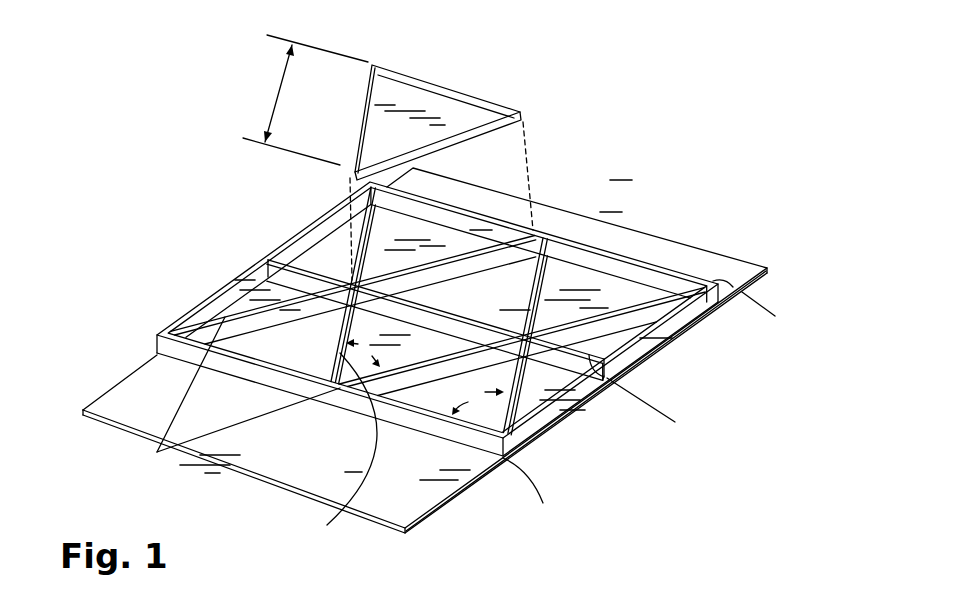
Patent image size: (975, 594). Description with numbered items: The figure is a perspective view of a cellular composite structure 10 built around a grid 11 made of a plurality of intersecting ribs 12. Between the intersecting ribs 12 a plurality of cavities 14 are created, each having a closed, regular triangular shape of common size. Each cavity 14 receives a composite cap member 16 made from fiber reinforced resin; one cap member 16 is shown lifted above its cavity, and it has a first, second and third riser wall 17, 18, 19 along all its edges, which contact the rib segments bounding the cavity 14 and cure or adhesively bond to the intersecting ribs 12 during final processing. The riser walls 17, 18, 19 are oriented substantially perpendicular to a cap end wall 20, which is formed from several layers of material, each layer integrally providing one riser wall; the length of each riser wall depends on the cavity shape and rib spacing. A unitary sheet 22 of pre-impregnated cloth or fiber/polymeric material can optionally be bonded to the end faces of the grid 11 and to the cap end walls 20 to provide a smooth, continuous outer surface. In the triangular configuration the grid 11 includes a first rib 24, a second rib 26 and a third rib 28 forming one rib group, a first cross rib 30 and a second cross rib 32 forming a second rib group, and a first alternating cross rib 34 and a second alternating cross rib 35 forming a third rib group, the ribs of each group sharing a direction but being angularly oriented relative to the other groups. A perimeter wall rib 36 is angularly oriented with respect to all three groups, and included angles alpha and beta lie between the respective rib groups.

The cellular composite structure 10 is at (624, 106).
The grid 11 is at (284, 236).
The intersecting ribs 12 is at (623, 257).
The cavities 14 is at (382, 236).
The composite cap member 16 is at (346, 132).
The first riser wall 17 is at (457, 92).
The second riser wall 18 is at (362, 108).
The third riser wall 19 is at (493, 132).
The cap end wall 20 is at (407, 100).
The unitary sheet 22 is at (712, 267).
The first rib 24 is at (665, 268).
The second rib 26 is at (600, 380).
The third rib 28 is at (470, 430).
The first cross rib 30 is at (513, 415).
The second cross rib 32 is at (362, 225).
The first alternating cross rib 34 is at (693, 322).
The second alternating cross rib 35 is at (255, 307).
The perimeter wall rib 36 is at (203, 302).